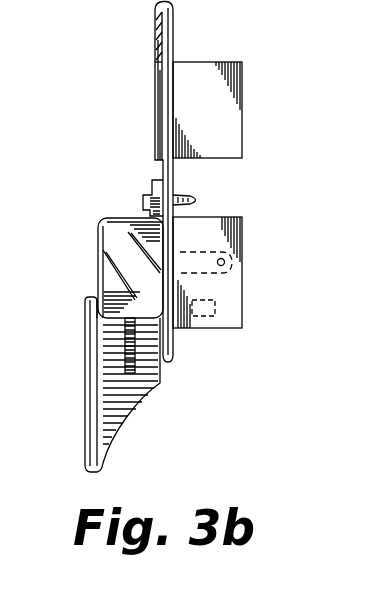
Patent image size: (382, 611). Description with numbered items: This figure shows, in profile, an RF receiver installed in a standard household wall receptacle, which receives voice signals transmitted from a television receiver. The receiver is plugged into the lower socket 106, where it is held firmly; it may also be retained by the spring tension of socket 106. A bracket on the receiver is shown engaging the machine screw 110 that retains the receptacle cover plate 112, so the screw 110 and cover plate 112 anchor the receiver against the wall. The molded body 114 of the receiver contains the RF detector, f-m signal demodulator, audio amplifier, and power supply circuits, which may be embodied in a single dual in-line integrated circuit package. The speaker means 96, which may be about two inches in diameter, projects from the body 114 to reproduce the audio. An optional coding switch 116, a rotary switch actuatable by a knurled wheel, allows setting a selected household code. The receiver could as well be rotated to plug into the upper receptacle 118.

The speaker means 96 is at (83, 398).
The socket 106 is at (236, 247).
The machine screw 110 is at (145, 192).
The receptacle cover plate 112 is at (155, 38).
The molded body 114 is at (122, 262).
The coding switch 116 is at (135, 360).
The upper receptacle 118 is at (222, 110).